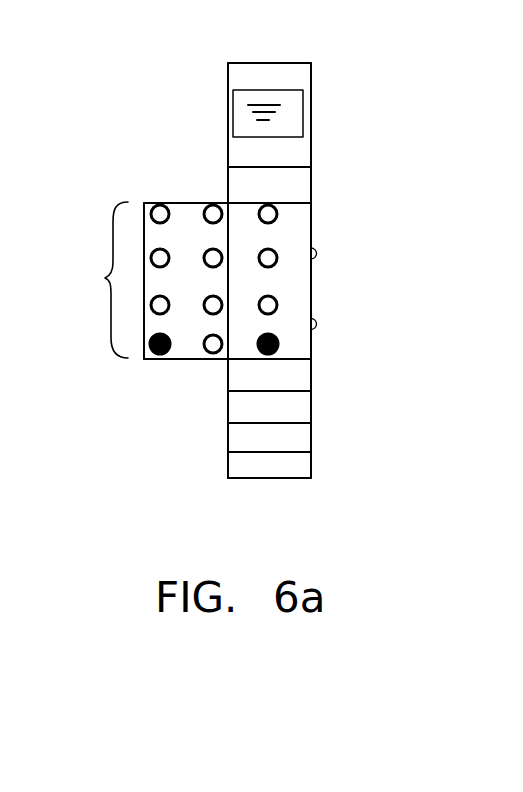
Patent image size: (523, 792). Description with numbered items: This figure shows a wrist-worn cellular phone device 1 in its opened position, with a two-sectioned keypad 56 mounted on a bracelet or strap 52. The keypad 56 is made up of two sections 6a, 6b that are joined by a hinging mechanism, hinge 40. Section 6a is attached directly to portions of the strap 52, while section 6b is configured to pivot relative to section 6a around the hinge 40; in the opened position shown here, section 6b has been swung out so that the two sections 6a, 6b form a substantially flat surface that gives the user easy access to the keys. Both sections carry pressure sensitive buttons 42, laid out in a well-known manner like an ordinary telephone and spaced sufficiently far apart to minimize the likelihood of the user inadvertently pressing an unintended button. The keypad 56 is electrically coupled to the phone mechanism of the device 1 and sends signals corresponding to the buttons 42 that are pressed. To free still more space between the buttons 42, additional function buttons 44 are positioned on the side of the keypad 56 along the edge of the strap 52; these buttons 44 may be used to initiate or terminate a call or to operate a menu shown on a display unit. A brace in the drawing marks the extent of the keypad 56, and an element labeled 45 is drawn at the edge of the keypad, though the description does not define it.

The device 1 is at (185, 89).
The section 6a is at (288, 287).
The section 6b is at (185, 218).
The hinge 40 is at (228, 320).
The pressure sensitive buttons 42 is at (277, 249).
The function buttons 44 is at (317, 251).
The keypad edge / hinge 45 is at (144, 276).
The strap 52 is at (297, 182).
The keypad 56 is at (92, 280).